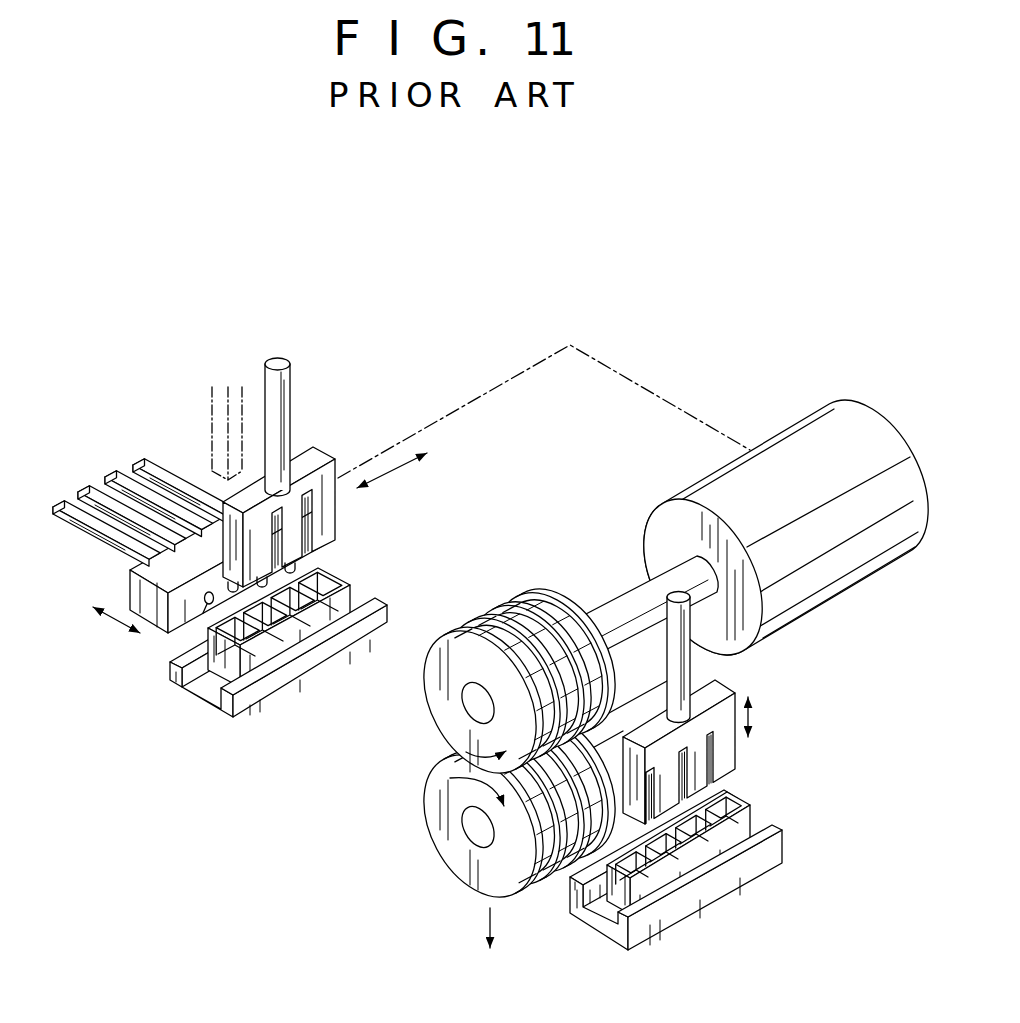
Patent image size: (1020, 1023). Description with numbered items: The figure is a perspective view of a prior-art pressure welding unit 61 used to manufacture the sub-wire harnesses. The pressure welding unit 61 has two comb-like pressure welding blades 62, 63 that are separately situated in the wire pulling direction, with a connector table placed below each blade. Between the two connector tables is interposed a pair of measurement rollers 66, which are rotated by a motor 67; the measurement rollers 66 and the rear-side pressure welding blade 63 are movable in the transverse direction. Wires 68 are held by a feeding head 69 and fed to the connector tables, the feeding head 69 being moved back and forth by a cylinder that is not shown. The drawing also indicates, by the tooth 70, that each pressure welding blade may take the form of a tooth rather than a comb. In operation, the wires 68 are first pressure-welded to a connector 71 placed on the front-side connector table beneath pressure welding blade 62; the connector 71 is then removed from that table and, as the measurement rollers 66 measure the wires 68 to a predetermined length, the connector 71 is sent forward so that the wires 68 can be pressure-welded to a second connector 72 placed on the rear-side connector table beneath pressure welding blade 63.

The pressure welding unit 61 is at (490, 638).
The pressure welding blade 62 is at (737, 760).
The pressure welding blade 63 is at (337, 524).
The measurement rollers 66 is at (438, 805).
The motor 67 is at (797, 440).
The wires 68 is at (175, 486).
The feeding head 69 is at (160, 623).
The tooth 70 is at (212, 406).
The connector 71 is at (742, 814).
The connector 72 is at (220, 670).